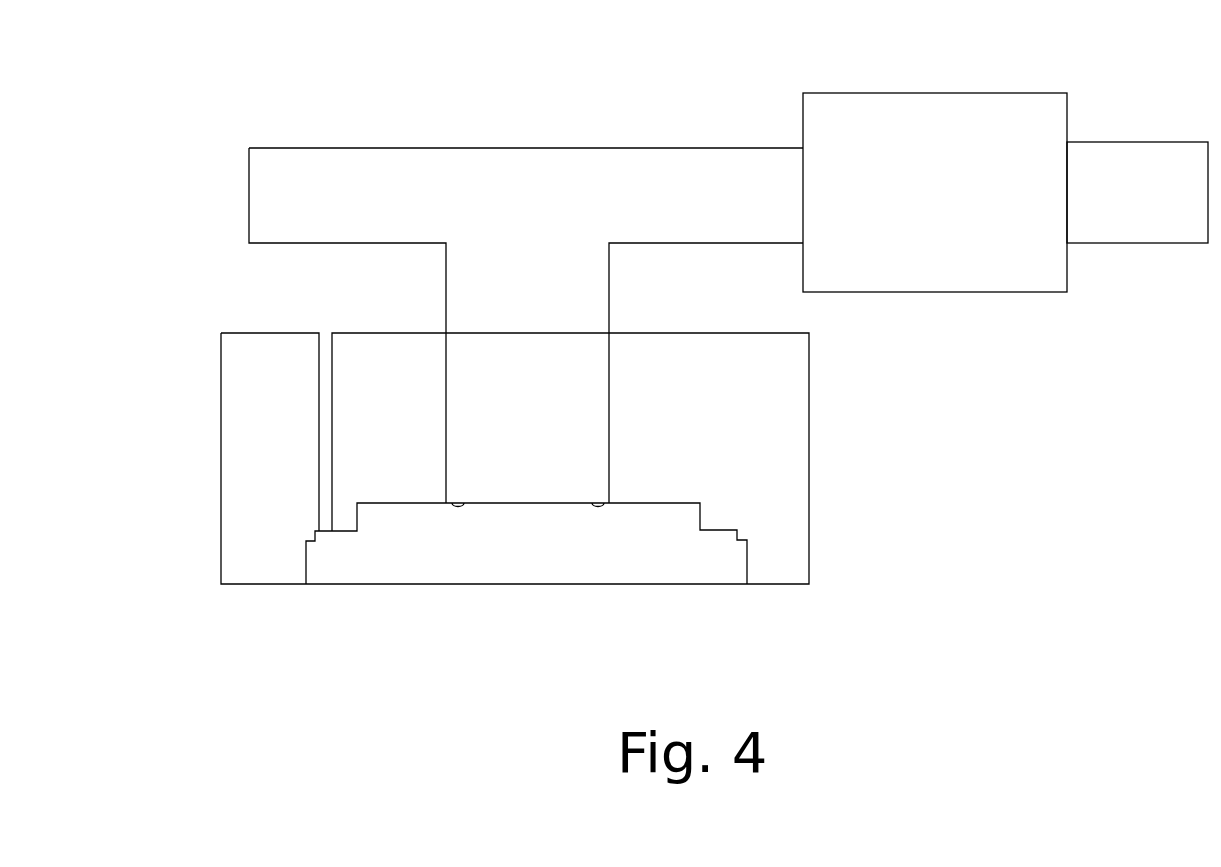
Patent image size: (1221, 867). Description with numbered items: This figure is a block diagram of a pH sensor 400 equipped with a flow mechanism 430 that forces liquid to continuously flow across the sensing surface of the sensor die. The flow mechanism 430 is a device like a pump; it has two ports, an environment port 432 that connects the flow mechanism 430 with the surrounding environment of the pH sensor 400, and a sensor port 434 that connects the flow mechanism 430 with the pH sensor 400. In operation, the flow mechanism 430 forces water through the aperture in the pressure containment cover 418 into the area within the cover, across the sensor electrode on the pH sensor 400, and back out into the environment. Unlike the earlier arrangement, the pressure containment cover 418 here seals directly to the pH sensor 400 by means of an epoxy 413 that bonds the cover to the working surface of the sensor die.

The pH sensor 400 is at (535, 585).
The epoxy 413 is at (608, 502).
The pressure containment cover 418 is at (393, 332).
The flow mechanism 430 is at (887, 90).
The environment port 432 is at (1138, 139).
The sensor port 434 is at (385, 147).